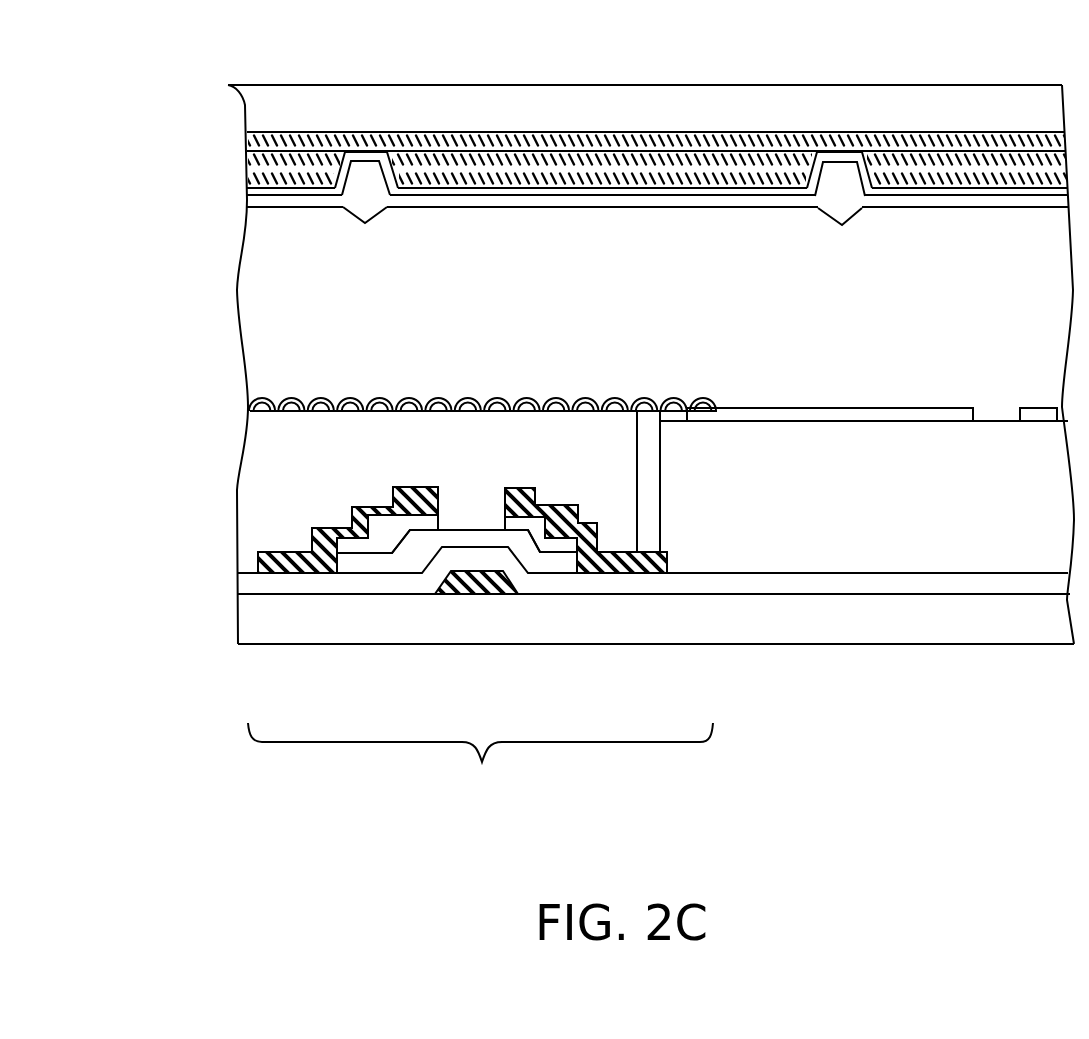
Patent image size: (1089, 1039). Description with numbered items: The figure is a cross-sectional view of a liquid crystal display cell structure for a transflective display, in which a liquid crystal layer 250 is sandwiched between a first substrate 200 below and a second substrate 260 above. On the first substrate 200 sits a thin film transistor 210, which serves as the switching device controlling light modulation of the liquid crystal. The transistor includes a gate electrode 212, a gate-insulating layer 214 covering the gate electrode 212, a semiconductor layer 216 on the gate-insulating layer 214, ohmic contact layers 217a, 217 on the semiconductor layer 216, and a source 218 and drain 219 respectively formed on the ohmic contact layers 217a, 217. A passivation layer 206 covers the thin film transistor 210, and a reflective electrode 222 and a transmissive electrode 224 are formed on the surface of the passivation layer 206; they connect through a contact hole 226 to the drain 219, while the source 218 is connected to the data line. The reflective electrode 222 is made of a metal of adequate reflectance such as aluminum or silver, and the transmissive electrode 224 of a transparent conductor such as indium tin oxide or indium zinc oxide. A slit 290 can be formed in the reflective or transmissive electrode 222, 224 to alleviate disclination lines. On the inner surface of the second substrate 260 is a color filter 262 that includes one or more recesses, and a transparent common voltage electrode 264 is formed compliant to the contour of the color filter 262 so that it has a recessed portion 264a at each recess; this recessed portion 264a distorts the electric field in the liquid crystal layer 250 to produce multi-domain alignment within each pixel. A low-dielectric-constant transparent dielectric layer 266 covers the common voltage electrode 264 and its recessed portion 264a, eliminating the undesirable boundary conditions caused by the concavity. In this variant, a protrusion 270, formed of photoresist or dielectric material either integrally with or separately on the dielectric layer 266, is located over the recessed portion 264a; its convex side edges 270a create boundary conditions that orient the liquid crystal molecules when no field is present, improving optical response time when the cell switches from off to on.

The first substrate 200 is at (247, 627).
The passivation layer 206 is at (255, 458).
The thin film transistor 210 is at (480, 776).
The gate electrode 212 is at (482, 594).
The gate-insulating layer 214 is at (243, 585).
The semiconductor layer 216 is at (473, 529).
The ohmic contact layer 217 is at (503, 528).
The ohmic contact layer 217a is at (445, 517).
The source 218 is at (282, 573).
The drain 219 is at (638, 573).
The reflective electrode 222 is at (496, 398).
The transmissive electrode 224 is at (793, 412).
The contact hole 226 is at (660, 448).
The liquid crystal layer 250 is at (255, 332).
The second substrate 260 is at (255, 110).
The color filter 262 is at (248, 158).
The common voltage electrode 264 is at (248, 193).
The recessed portion 264a is at (368, 152).
The dielectric layer 266 is at (248, 202).
The protrusion 270 is at (376, 242).
The convex side edges 270a is at (355, 208).
The slit 290 is at (1001, 404).